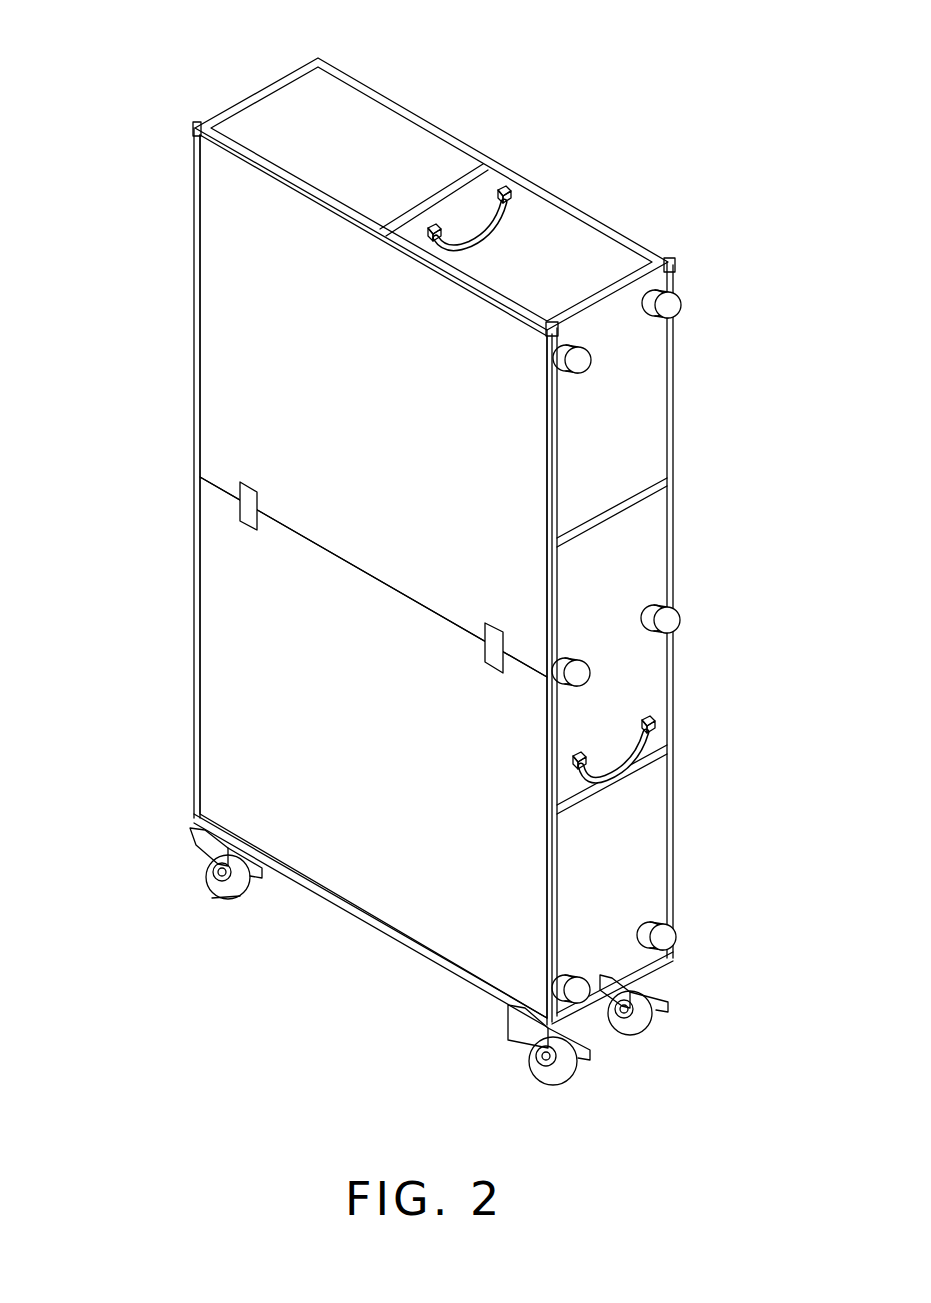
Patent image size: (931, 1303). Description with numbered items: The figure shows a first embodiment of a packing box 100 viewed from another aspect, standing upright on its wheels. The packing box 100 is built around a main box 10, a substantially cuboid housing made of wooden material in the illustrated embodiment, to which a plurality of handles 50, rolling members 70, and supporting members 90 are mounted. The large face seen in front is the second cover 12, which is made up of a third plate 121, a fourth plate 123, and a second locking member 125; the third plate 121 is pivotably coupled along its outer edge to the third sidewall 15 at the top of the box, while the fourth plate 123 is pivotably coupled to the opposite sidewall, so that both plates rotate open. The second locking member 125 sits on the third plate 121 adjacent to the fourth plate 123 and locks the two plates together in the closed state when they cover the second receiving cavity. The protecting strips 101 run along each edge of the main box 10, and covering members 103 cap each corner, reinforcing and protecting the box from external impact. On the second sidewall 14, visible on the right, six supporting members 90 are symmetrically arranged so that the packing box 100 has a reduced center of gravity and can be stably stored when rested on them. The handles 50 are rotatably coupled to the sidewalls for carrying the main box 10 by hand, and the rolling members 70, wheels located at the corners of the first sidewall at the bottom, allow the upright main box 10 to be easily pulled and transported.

The packing box 100 is at (175, 65).
The main box 10 is at (452, 132).
The third sidewall 15 is at (540, 240).
The covering member 103 is at (672, 264).
The supporting member 90 is at (667, 308).
The protecting strip 101 is at (668, 445).
The second sidewall 14 is at (648, 550).
The handle 50 is at (617, 778).
The rolling member 70 is at (657, 1018).
The second cover 12 is at (97, 370).
The third plate 121 is at (247, 427).
The second locking member 125 is at (243, 497).
The fourth plate 123 is at (237, 580).